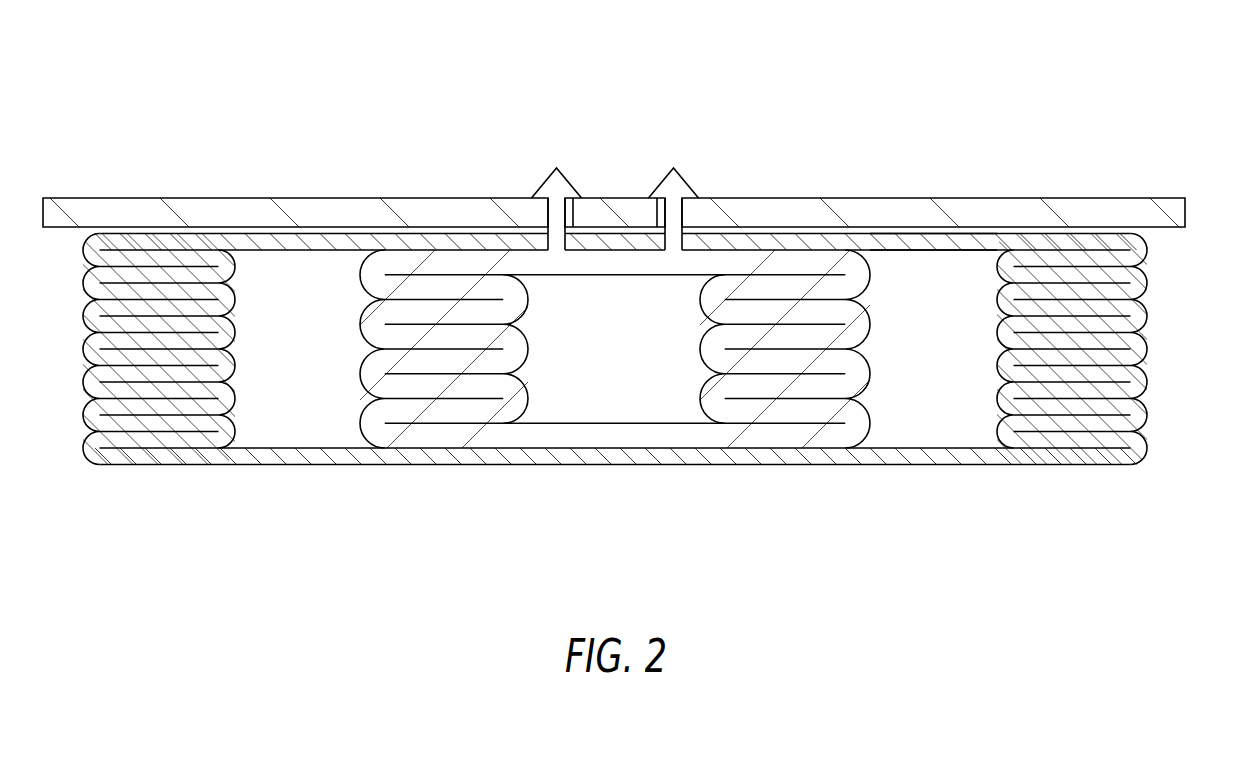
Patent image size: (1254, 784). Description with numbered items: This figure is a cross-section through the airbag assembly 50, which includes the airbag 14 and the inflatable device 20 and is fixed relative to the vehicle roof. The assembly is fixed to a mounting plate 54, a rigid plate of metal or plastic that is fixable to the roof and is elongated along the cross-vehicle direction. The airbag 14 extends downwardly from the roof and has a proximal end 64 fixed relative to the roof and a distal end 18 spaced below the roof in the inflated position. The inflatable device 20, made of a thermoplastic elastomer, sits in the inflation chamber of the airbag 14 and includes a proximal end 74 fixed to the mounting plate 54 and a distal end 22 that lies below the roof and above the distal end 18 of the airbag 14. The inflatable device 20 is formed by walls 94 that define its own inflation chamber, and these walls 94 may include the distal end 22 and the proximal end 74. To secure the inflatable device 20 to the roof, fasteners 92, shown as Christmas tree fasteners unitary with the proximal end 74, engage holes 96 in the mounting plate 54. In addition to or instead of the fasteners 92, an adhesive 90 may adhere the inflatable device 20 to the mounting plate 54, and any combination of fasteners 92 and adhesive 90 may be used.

The airbag assembly 50 is at (995, 85).
The mounting plate 54 is at (1060, 210).
The adhesive 90 is at (1135, 231).
The fasteners 92 is at (674, 168).
The holes 96 is at (653, 213).
The proximal end 74 is at (603, 258).
The walls 94 is at (712, 345).
The proximal end 64 is at (945, 238).
The airbag 14 is at (1153, 348).
The inflatable device 20 is at (877, 382).
The distal end 18 is at (307, 455).
The distal end 22 is at (593, 437).